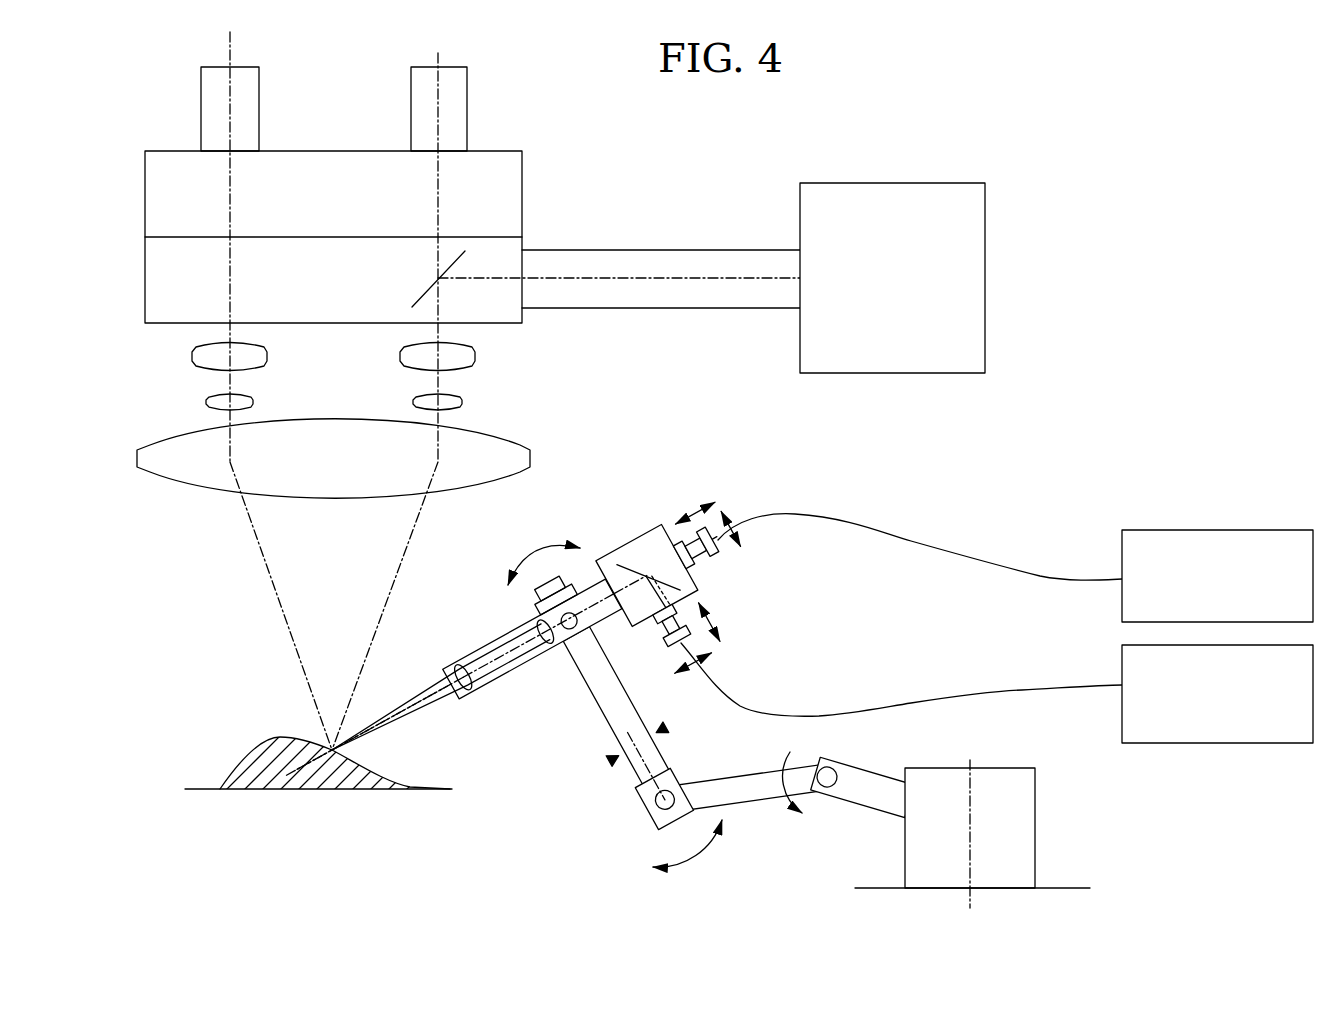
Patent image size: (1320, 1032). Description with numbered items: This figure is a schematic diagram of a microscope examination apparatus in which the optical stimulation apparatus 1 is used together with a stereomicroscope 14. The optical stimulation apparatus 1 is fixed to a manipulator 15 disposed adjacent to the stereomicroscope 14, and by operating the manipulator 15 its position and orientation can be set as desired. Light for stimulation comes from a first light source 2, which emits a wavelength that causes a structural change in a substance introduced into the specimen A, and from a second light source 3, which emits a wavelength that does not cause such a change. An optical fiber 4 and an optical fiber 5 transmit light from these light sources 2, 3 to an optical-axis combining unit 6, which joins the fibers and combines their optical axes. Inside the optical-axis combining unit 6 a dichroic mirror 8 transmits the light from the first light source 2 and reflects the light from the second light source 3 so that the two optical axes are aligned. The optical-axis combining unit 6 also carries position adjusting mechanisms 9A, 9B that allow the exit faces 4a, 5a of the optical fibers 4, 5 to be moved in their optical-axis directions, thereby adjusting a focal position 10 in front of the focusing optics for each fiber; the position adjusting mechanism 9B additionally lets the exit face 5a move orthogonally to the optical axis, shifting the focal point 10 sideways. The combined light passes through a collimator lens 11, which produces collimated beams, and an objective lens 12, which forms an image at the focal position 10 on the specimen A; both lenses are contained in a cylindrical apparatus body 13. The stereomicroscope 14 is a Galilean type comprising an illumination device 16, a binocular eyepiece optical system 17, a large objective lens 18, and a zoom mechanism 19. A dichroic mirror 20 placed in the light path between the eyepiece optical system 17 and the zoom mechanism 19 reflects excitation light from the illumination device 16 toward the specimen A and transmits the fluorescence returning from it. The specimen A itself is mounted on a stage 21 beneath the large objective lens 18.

The optical stimulation apparatus 1 is at (922, 498).
The first light source 2 is at (1190, 530).
The second light source 3 is at (1168, 745).
The optical fiber 4 is at (1039, 567).
The exit face 4a is at (673, 525).
The optical fiber 5 is at (1066, 689).
The exit face 5a is at (655, 624).
The optical-axis combining unit 6 is at (650, 529).
The dichroic mirror 8 is at (618, 565).
The position adjusting mechanism 9A is at (719, 557).
The position adjusting mechanism 9B is at (672, 651).
The focal position 10 is at (333, 748).
The collimator lens 11 is at (537, 617).
The objective lens 12 is at (455, 665).
The cylindrical apparatus body 13 is at (517, 676).
The stereomicroscope 14 is at (527, 129).
The manipulator 15 is at (615, 806).
The illumination device 16 is at (970, 152).
The binocular eyepiece optical system 17 is at (411, 101).
The large objective lens 18 is at (492, 437).
The zoom mechanism 19 is at (280, 369).
The dichroic mirror 20 is at (417, 297).
The stage 21 is at (202, 788).
The specimen A is at (282, 737).